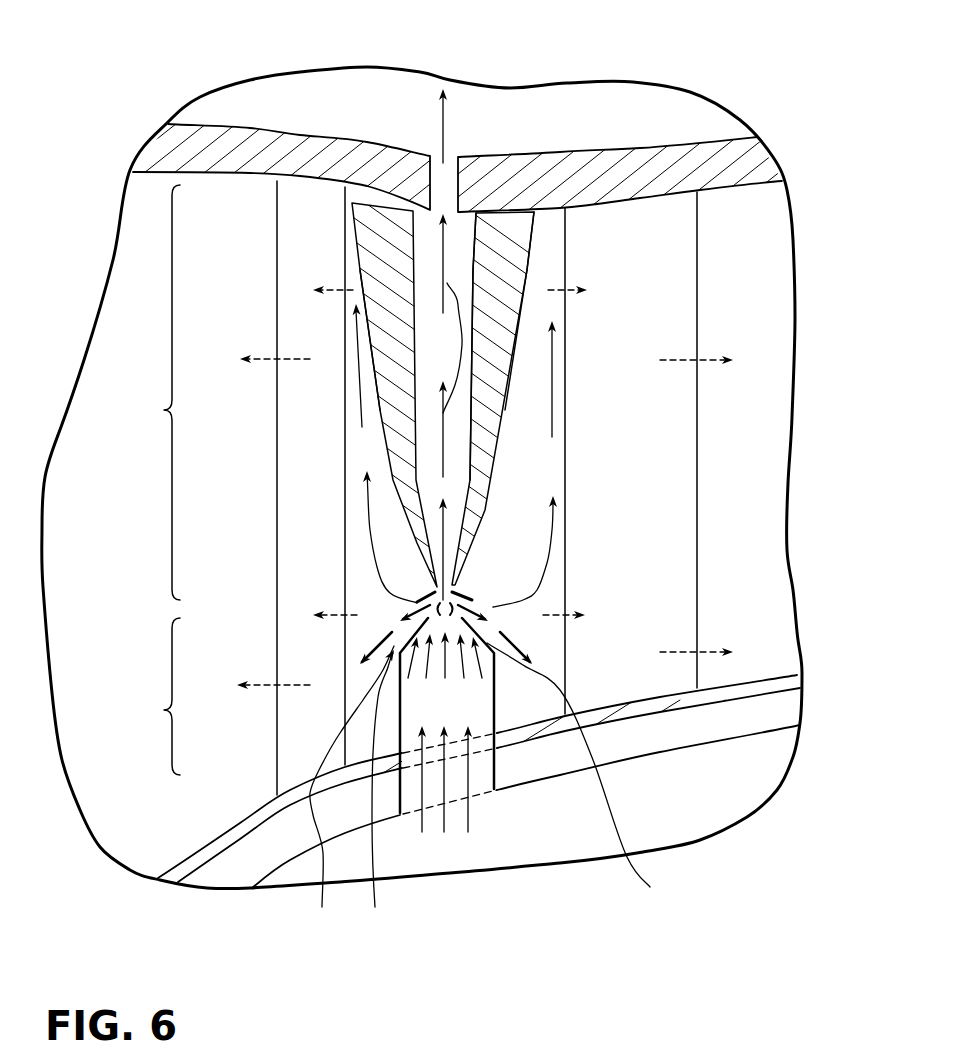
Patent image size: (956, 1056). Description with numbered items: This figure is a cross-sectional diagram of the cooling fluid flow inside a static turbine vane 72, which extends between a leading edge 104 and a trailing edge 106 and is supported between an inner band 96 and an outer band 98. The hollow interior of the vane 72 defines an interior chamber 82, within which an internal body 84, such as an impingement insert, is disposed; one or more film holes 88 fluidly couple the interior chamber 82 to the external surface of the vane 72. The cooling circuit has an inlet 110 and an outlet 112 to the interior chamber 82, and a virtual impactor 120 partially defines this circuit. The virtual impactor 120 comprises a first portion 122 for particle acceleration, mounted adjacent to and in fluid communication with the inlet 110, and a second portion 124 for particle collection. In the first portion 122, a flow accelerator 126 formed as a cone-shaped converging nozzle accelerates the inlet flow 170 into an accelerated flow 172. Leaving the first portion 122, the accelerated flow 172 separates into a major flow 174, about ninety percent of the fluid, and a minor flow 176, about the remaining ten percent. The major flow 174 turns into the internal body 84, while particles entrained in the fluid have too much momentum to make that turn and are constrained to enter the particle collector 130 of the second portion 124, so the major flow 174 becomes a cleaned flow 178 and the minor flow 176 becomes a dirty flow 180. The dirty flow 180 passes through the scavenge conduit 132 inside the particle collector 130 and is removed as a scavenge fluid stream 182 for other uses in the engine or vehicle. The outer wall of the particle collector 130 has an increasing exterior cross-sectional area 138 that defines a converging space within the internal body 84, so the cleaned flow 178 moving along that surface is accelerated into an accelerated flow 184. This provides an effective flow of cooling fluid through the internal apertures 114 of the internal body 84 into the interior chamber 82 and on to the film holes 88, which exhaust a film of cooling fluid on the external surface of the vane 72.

The vane 72 is at (705, 332).
The interior chamber 82 is at (634, 474).
The internal body 84 is at (349, 790).
The film holes 88 is at (258, 365).
The inner band 96 is at (777, 675).
The outer band 98 is at (753, 188).
The leading edge 104 is at (277, 207).
The trailing edge 106 is at (697, 217).
The inlet 110 is at (472, 812).
The outlet 112 is at (430, 156).
The internal apertures 114 is at (334, 292).
The virtual impactor 120 is at (388, 788).
The first portion 122 is at (150, 696).
The second portion 124 is at (150, 392).
The flow accelerator 126 is at (591, 770).
The particle collector 130 is at (375, 430).
The scavenge conduit 132 is at (462, 233).
The increasing exterior cross-sectional area 138 is at (360, 270).
The inlet flow 170 is at (490, 805).
The accelerated flow 172 is at (483, 675).
The major flow 174 is at (417, 607).
The minor flow 176 is at (448, 538).
The cleaned flow 178 is at (370, 556).
The dirty flow 180 is at (455, 345).
The scavenge fluid stream 182 is at (443, 127).
The accelerated flow 184 is at (357, 370).